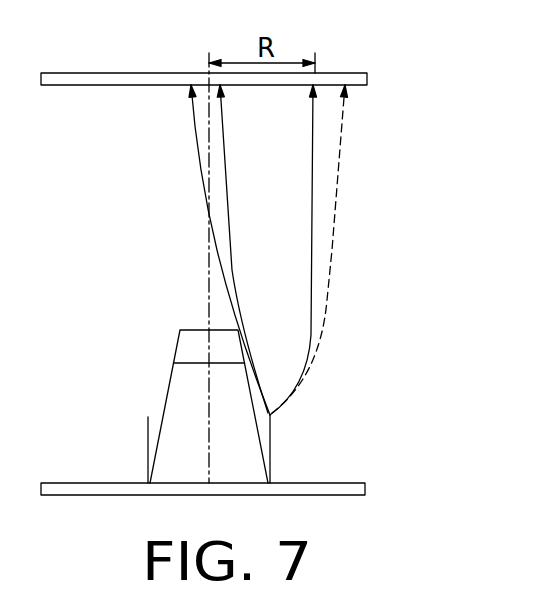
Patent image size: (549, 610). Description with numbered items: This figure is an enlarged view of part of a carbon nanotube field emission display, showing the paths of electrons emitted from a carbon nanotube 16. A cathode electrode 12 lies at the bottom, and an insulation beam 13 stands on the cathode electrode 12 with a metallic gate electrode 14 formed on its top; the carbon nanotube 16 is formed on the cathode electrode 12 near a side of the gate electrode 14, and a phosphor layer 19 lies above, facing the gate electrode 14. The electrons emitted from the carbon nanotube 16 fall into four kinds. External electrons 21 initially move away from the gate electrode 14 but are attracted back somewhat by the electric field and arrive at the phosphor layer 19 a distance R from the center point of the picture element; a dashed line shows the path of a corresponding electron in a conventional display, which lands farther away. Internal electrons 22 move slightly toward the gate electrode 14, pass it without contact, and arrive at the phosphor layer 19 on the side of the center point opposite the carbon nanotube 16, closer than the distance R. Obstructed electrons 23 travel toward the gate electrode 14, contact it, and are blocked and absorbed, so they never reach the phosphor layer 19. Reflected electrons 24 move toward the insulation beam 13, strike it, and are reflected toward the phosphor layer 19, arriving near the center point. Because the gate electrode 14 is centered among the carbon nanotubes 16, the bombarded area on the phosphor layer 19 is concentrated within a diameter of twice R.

The cathode electrode 12 is at (350, 487).
The insulation beam 13 is at (238, 462).
The gate electrode 14 is at (190, 348).
The carbon nanotube 16 is at (272, 433).
The phosphor layer 19 is at (357, 76).
The external electrons 21 is at (313, 192).
The internal electrons 22 is at (196, 145).
The obstructed electrons 23 is at (250, 385).
The reflected electrons 24 is at (226, 152).